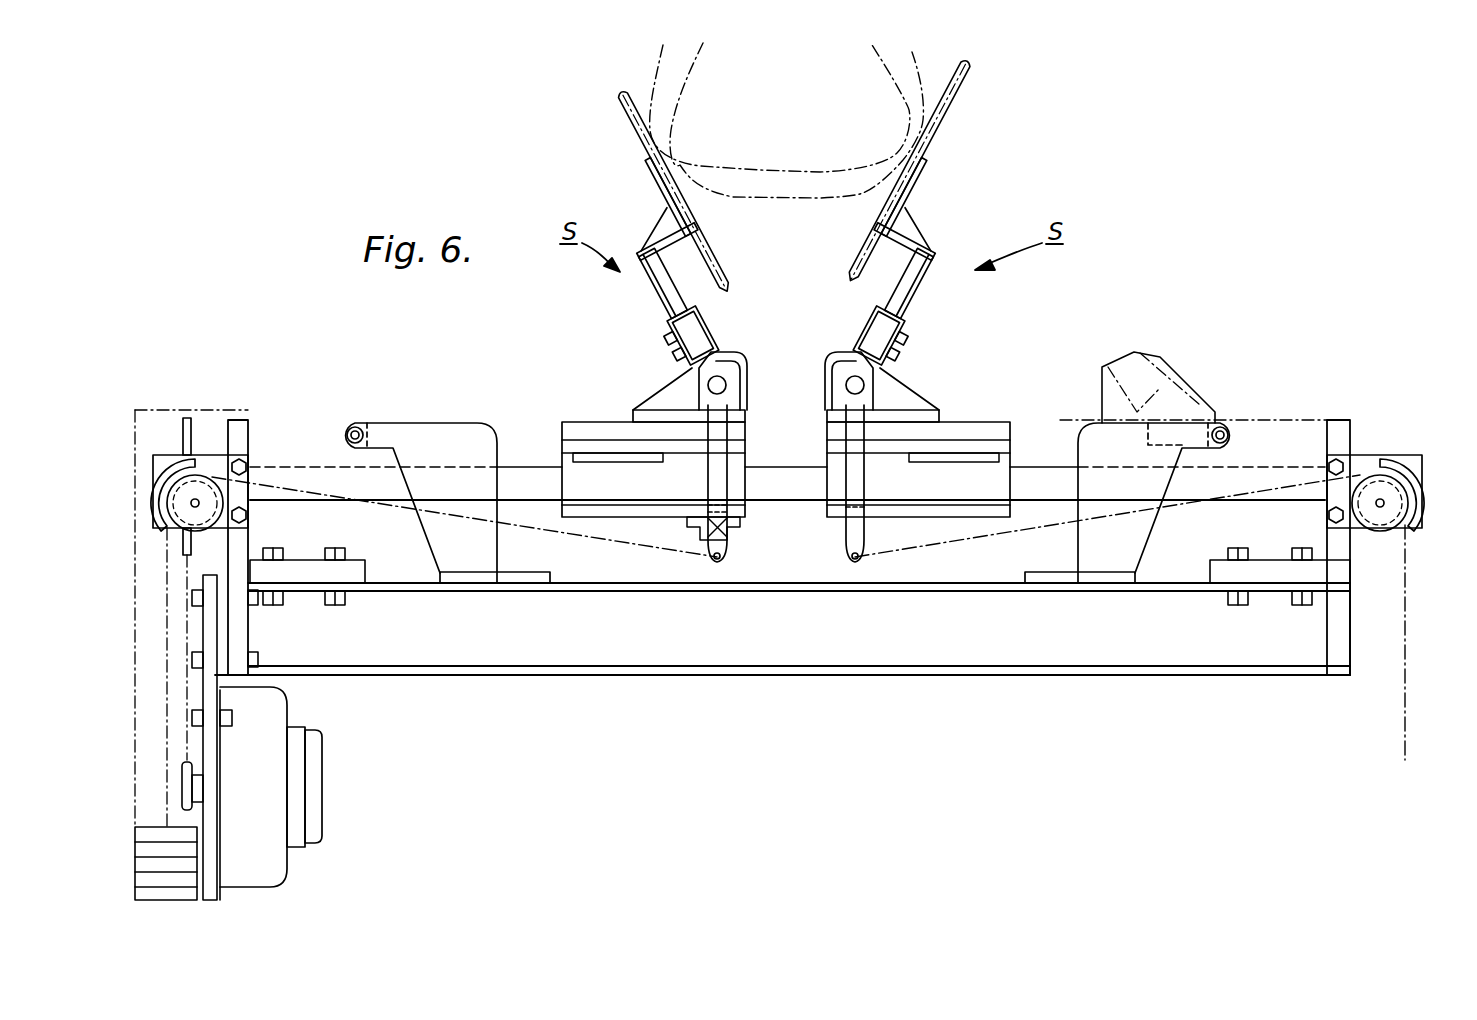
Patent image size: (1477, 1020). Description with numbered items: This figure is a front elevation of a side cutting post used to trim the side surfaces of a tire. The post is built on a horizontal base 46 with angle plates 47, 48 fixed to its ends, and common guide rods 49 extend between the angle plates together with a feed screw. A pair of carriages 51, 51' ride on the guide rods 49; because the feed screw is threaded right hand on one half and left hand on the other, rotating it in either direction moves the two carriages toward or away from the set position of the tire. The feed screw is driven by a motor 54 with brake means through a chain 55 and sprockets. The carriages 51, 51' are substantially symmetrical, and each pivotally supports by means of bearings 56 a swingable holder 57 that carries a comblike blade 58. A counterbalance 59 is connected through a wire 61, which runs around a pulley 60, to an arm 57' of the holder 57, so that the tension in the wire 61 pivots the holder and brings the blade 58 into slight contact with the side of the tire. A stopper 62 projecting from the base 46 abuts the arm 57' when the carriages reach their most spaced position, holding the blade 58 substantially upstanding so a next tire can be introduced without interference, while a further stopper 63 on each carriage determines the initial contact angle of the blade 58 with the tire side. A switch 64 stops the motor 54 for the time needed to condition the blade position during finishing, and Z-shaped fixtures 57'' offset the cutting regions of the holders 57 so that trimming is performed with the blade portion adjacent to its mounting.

The horizontal base 46 is at (905, 670).
The angle plate 47 is at (335, 560).
The angle plate 48 is at (1315, 570).
The guide rods 49 is at (785, 470).
The carriage 51 is at (653, 455).
The carriage 51' is at (924, 447).
The motor 54 is at (278, 870).
The chain 55 is at (190, 600).
The bearings 56 is at (900, 395).
The swingable holder 57 is at (731, 358).
The arm 57' is at (777, 483).
The Z-shaped fixture 57'' is at (794, 236).
The comblike blade 58 is at (940, 130).
The counterbalance 59 is at (140, 826).
The pulley 60 is at (200, 465).
The wire 61 is at (420, 512).
The stopper 62 is at (362, 430).
The stopper 63 is at (575, 448).
The switch 64 is at (740, 530).